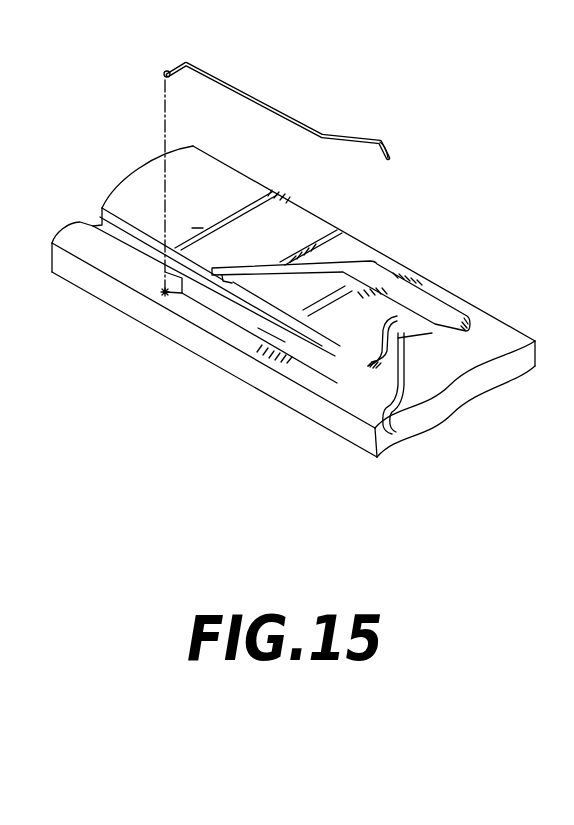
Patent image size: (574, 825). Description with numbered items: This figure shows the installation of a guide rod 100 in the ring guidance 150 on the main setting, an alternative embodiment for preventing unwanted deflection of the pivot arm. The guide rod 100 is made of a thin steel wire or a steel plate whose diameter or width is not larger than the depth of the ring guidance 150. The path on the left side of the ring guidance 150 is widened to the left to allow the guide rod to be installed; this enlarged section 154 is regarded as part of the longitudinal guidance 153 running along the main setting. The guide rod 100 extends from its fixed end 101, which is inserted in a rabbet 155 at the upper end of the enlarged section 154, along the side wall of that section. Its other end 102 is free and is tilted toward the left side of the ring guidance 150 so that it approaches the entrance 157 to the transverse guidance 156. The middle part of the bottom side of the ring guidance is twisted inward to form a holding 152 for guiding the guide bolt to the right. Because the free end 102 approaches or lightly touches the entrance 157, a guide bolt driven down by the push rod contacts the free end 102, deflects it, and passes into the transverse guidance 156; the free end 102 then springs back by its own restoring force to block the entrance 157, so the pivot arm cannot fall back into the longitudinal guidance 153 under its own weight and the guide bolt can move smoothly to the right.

The guide rod 100 is at (290, 70).
The fixed end 101 is at (166, 62).
The free end 102 is at (380, 140).
The ring guidance 150 is at (398, 212).
The holding 152 is at (387, 316).
The longitudinal guidance 153 is at (123, 237).
The enlarged section 154 is at (258, 345).
The rabbet 155 is at (162, 296).
The transverse guidance 156 is at (405, 358).
The entrance 157 is at (377, 358).